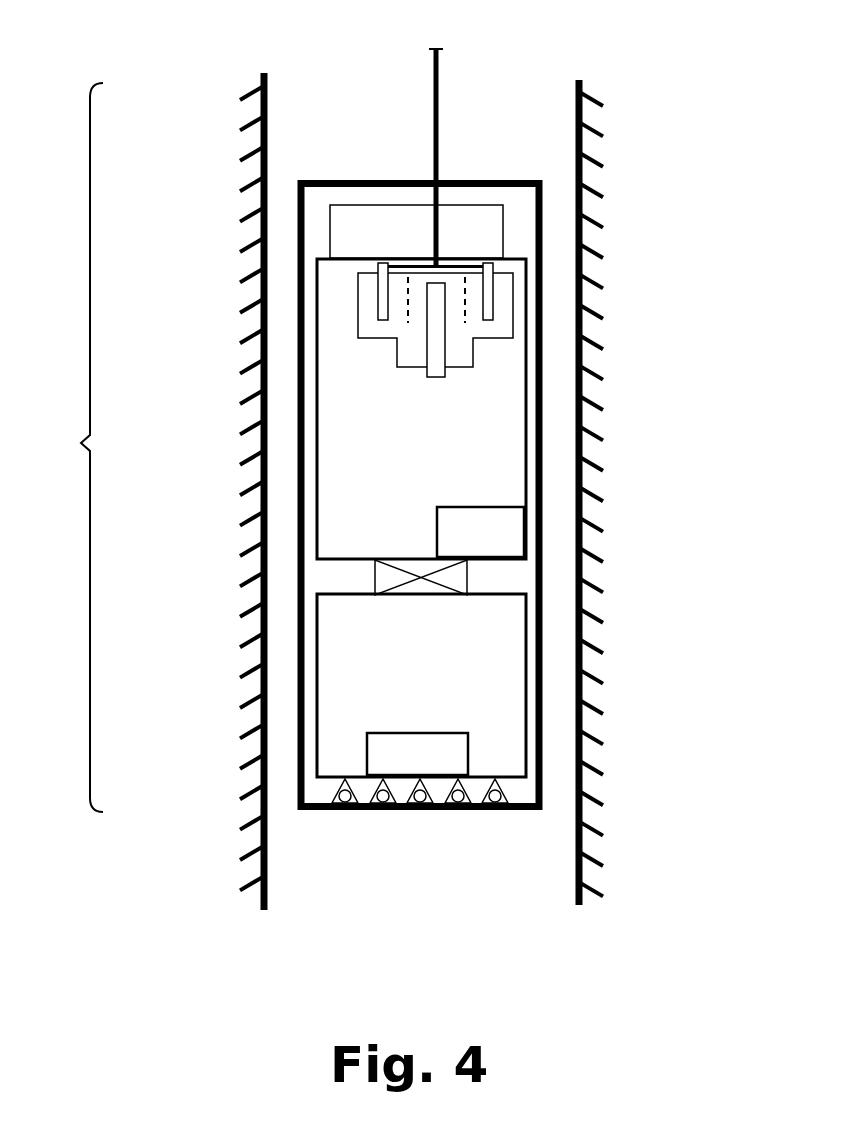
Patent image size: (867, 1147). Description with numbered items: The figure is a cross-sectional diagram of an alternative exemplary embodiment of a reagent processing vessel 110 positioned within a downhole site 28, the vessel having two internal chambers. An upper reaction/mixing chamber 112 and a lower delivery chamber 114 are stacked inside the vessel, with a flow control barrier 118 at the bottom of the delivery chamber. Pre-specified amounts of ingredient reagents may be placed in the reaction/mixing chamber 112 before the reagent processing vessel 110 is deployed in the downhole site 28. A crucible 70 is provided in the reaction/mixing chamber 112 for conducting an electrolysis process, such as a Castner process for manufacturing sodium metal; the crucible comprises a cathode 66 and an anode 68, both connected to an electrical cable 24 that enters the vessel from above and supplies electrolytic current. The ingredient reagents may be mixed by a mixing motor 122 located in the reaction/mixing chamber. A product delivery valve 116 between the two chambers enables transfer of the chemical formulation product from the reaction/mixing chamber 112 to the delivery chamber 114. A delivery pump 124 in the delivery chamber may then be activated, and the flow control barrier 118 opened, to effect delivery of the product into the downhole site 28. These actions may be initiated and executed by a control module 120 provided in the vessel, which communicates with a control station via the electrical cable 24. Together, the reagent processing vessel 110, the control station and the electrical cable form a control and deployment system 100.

The electrical cable 24 is at (447, 98).
The downhole site 28 is at (466, 890).
The cathode 66 is at (433, 347).
The anode 68 is at (380, 263).
The crucible 70 is at (352, 321).
The control and deployment system 100 is at (65, 447).
The reagent processing vessel 110 is at (541, 183).
The reaction/mixing chamber 112 is at (380, 551).
The delivery chamber 114 is at (521, 642).
The product delivery valve 116 is at (488, 577).
The flow control barrier 118 is at (397, 808).
The control module 120 is at (503, 242).
The mixing motor 122 is at (513, 520).
The delivery pump 124 is at (518, 764).